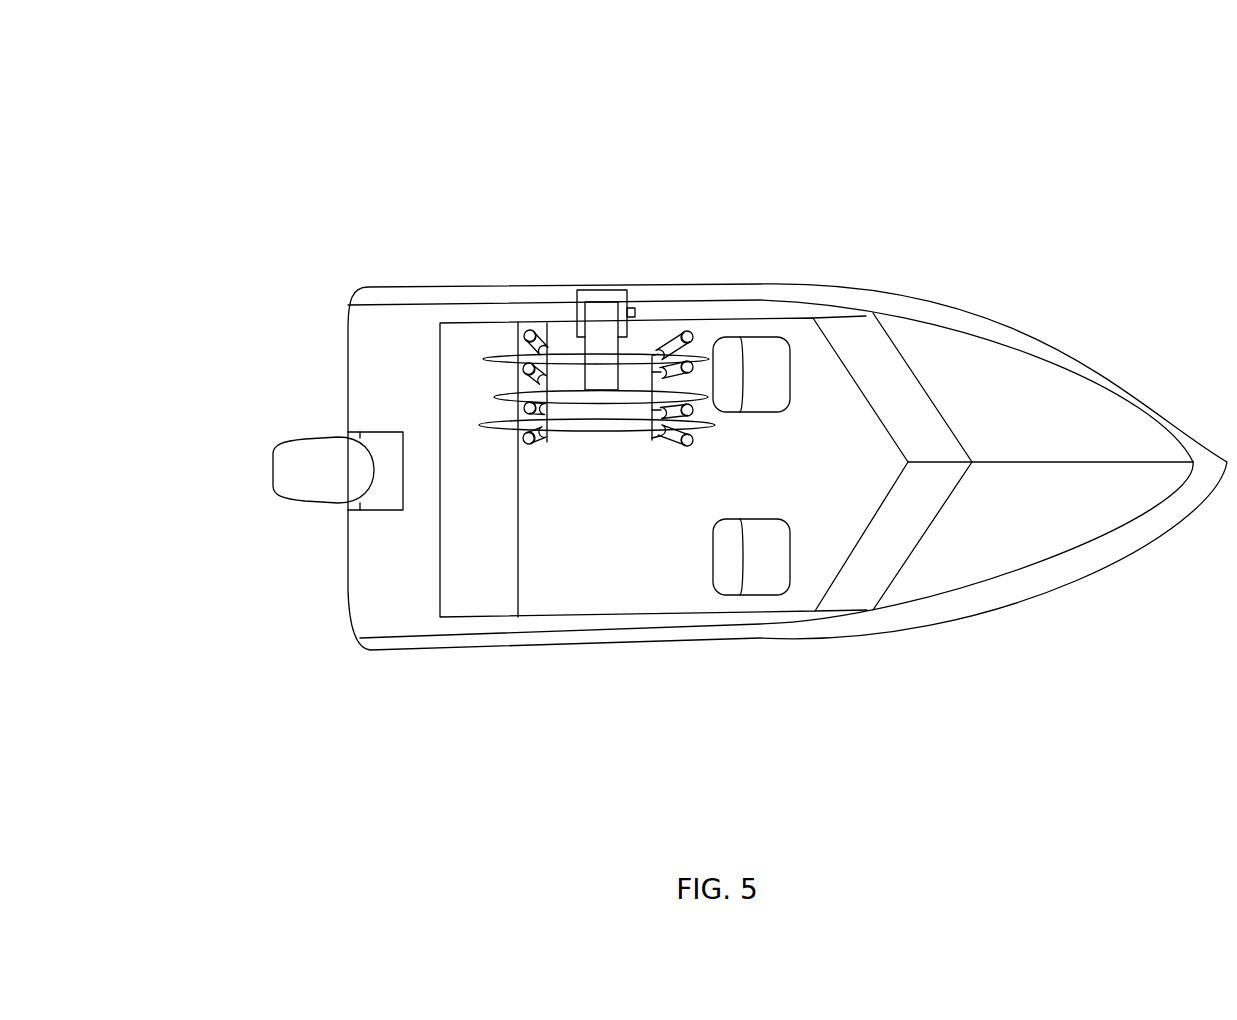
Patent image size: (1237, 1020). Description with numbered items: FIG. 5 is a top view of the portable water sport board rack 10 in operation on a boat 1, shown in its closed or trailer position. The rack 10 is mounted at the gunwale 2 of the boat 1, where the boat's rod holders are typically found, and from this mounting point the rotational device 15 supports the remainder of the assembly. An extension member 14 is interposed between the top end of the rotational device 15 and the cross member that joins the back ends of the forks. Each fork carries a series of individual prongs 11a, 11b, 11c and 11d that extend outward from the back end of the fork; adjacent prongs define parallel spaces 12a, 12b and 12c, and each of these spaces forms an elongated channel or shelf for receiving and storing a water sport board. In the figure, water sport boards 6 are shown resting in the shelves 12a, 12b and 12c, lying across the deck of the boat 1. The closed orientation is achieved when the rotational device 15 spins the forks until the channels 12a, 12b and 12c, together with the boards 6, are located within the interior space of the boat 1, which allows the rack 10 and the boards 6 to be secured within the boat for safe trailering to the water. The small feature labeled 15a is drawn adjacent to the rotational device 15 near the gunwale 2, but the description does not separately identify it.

The boat 1 is at (750, 467).
The gunwale 2 is at (526, 296).
The water sport boards 6 is at (596, 417).
The rack 10 is at (285, 158).
The prong 11a is at (692, 445).
The prong 11b is at (694, 413).
The prong 11c is at (689, 362).
The prong 11d is at (690, 331).
The parallel space 12a is at (466, 357).
The parallel space 12b is at (491, 390).
The parallel space 12c is at (461, 423).
The extension member 14 is at (601, 346).
The rotational device 15 is at (597, 297).
The connector 15a is at (633, 305).